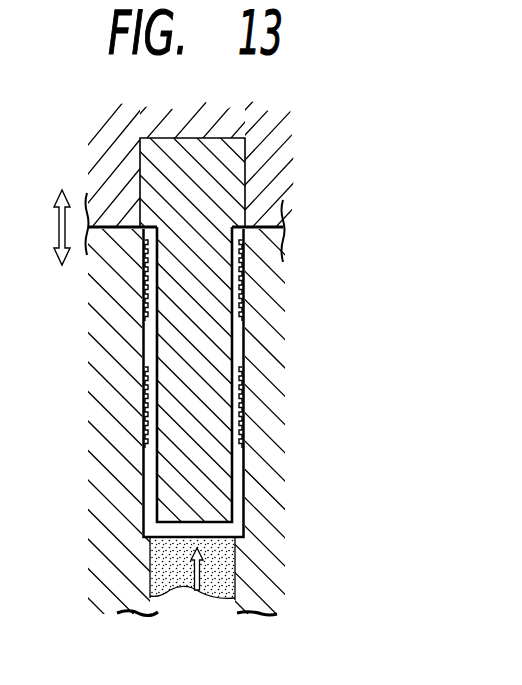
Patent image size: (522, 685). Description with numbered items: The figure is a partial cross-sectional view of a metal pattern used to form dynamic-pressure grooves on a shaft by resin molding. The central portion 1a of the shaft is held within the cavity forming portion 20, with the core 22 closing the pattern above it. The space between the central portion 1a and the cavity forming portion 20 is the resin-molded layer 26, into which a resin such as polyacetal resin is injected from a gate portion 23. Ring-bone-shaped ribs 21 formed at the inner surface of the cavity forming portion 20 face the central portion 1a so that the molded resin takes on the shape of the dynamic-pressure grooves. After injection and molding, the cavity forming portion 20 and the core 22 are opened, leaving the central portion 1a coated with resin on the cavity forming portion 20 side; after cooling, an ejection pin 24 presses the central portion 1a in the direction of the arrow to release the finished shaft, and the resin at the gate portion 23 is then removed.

The central portion 1a is at (142, 170).
The cavity forming portion 20 is at (265, 380).
The ring-bone-shaped ribs 21 is at (250, 270).
The core 22 is at (270, 175).
The gate portion 23 is at (285, 245).
The ejection pin 24 is at (120, 603).
The resin-molded layer 26 is at (140, 471).